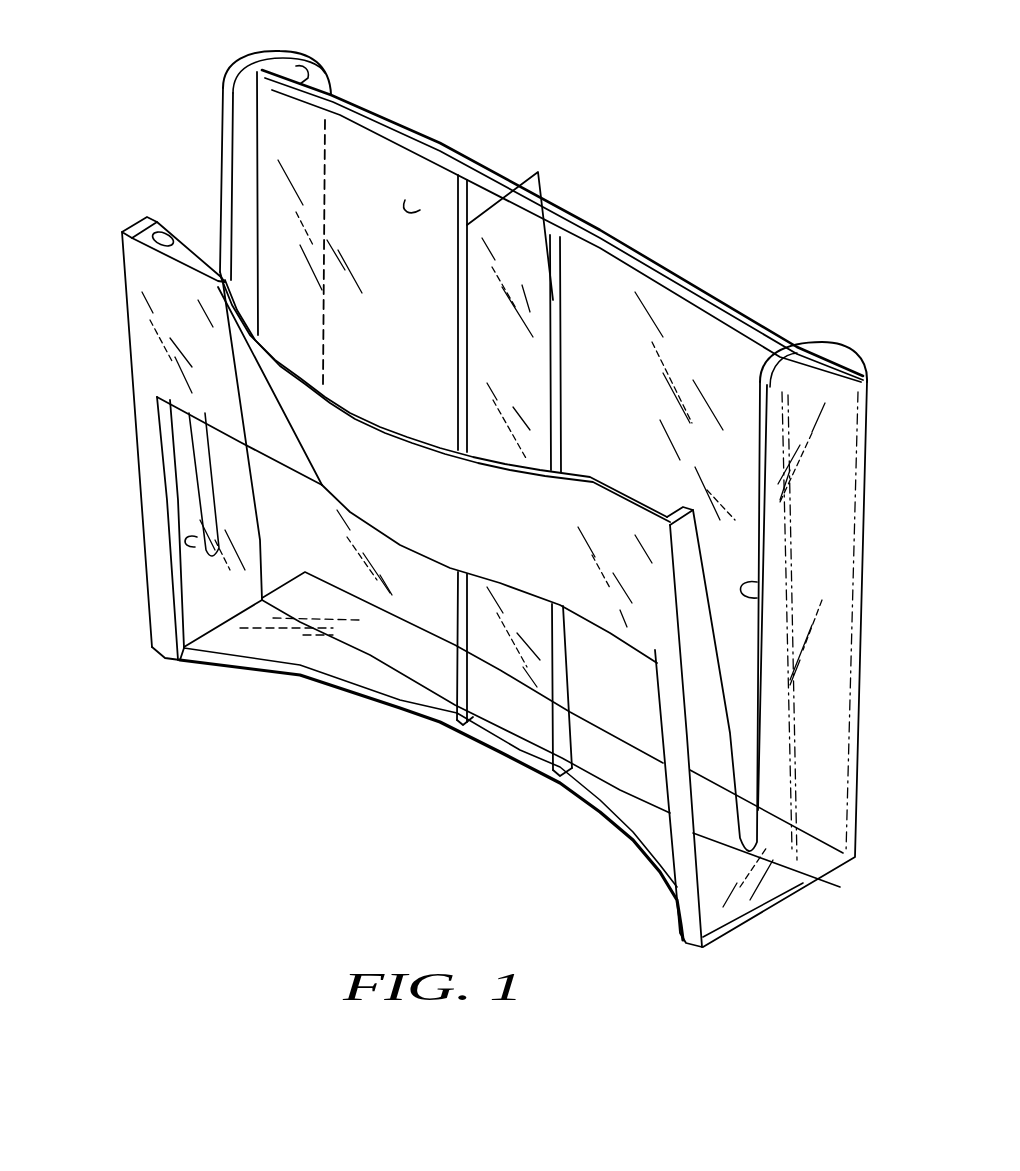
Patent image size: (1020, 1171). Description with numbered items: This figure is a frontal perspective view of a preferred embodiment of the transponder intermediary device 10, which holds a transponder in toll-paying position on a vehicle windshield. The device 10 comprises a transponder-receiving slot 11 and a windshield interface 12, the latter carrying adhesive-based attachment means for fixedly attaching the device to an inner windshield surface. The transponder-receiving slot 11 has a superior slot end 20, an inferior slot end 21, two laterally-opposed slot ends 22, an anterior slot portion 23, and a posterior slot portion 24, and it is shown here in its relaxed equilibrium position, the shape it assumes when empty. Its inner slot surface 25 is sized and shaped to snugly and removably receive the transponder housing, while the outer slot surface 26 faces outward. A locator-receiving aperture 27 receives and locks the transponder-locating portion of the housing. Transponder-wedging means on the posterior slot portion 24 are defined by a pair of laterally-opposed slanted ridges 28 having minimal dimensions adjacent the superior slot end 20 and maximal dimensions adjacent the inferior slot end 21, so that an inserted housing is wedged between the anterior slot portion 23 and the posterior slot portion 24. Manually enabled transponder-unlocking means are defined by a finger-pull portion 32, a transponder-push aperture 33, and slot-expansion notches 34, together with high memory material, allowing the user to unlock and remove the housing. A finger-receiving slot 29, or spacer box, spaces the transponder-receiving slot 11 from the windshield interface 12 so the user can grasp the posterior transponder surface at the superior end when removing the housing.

The transponder intermediary device 10 is at (597, 105).
The transponder-receiving slot 11 is at (380, 235).
The windshield interface 12 is at (693, 283).
The superior slot end 20 is at (274, 228).
The inferior slot end 21 is at (207, 632).
The laterally-opposed slot ends 22 is at (195, 544).
The anterior slot portion 23 is at (192, 275).
The posterior slot portion 24 is at (306, 130).
The inner slot surface 25 is at (193, 270).
The outer slot surface 26 is at (282, 75).
The locator-receiving aperture 27 is at (185, 465).
The slanted ridges 28 is at (548, 168).
The finger-receiving slot 29 is at (633, 263).
The finger-pull portion 32 is at (360, 423).
The transponder-push aperture 33 is at (567, 810).
The slot-expansion notches 34 is at (203, 433).